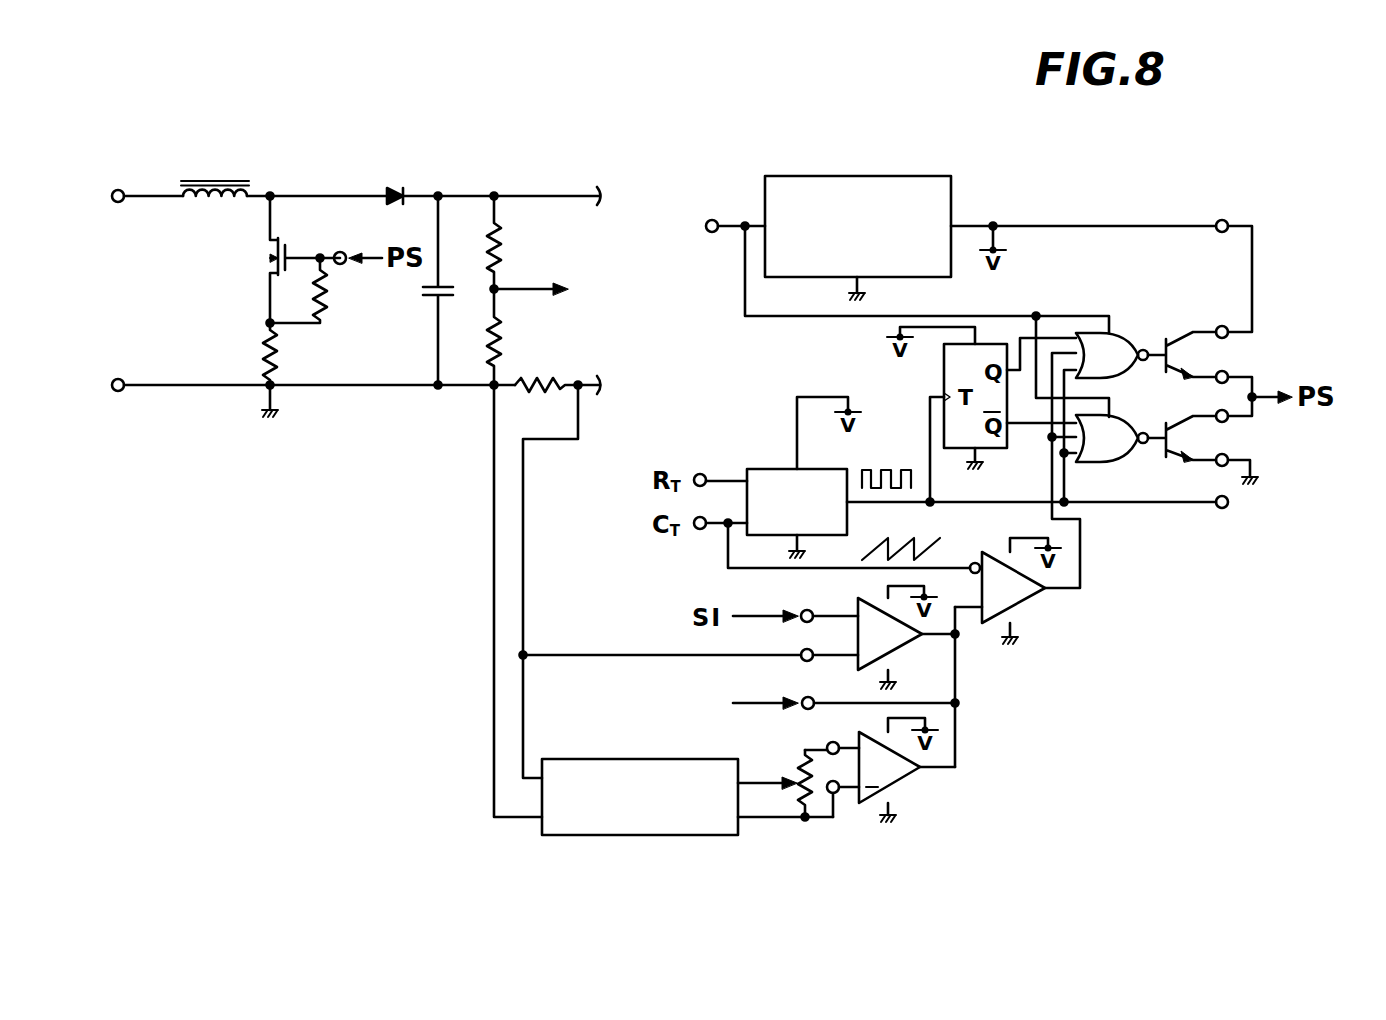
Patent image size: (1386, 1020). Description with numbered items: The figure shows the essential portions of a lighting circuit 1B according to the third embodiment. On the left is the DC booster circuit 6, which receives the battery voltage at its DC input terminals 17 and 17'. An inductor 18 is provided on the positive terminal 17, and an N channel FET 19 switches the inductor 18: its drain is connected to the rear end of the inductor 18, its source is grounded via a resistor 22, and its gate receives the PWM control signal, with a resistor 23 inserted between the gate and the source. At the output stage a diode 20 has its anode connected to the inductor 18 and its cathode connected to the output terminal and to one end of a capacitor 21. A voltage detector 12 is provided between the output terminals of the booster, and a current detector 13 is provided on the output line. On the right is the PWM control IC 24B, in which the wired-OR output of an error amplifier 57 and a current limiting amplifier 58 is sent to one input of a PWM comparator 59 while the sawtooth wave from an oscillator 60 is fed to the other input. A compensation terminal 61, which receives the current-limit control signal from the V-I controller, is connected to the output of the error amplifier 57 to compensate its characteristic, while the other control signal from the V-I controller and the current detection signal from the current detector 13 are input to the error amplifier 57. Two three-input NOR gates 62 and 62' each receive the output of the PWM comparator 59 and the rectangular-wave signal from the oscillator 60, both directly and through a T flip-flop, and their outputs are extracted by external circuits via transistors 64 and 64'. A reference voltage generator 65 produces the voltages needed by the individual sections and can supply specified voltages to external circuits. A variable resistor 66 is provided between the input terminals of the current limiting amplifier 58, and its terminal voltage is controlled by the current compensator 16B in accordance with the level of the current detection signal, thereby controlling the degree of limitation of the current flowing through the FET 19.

The lighting circuit 1B is at (784, 140).
The DC booster circuit 6 is at (506, 186).
The voltage detector 12 is at (513, 282).
The current detector 13 is at (538, 377).
The current compensator 16B is at (653, 836).
The DC input terminal 17 is at (131, 164).
The DC input terminal 17' is at (296, 353).
The inductor 18 is at (237, 182).
The FET 19 is at (268, 258).
The diode 20 is at (395, 188).
The capacitor 21 is at (447, 284).
The resistor 22 is at (266, 356).
The resistor 23 is at (328, 300).
The PWM control IC 24B is at (1022, 712).
The error amplifier 57 is at (900, 652).
The current limiting amplifier 58 is at (912, 780).
The PWM comparator 59 is at (1034, 598).
The oscillator 60 is at (770, 469).
The compensation terminal 61 is at (801, 708).
The 3-input NOR gate 62 is at (1118, 333).
The 3-input NOR gate 62' is at (1115, 460).
The transistor 64 is at (1188, 320).
The transistor 64' is at (1188, 461).
The reference voltage generator 65 is at (893, 176).
The variable resistor 66 is at (795, 802).